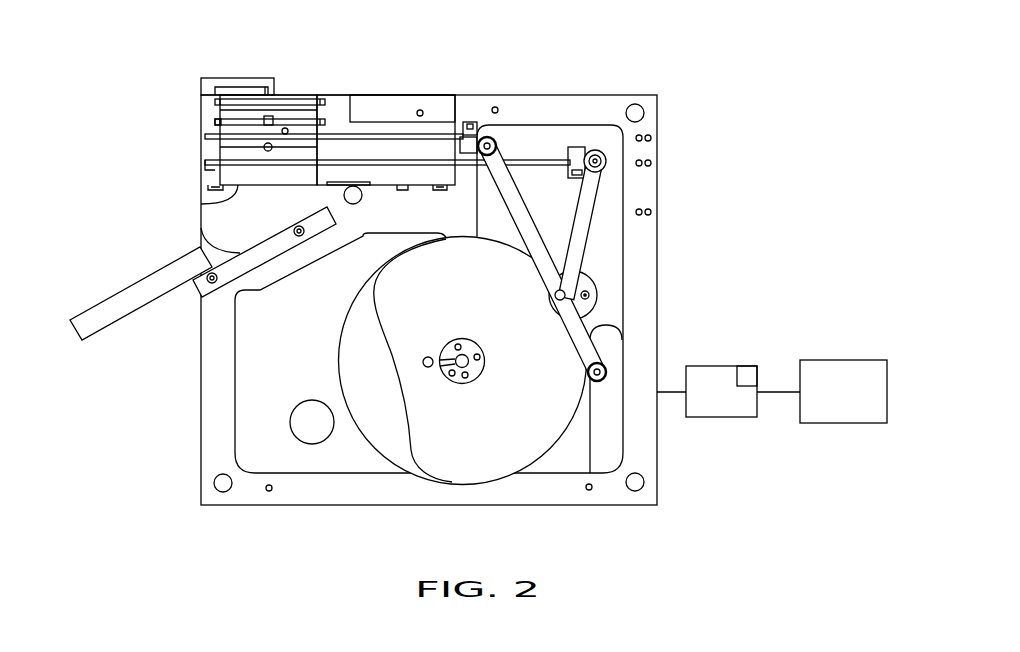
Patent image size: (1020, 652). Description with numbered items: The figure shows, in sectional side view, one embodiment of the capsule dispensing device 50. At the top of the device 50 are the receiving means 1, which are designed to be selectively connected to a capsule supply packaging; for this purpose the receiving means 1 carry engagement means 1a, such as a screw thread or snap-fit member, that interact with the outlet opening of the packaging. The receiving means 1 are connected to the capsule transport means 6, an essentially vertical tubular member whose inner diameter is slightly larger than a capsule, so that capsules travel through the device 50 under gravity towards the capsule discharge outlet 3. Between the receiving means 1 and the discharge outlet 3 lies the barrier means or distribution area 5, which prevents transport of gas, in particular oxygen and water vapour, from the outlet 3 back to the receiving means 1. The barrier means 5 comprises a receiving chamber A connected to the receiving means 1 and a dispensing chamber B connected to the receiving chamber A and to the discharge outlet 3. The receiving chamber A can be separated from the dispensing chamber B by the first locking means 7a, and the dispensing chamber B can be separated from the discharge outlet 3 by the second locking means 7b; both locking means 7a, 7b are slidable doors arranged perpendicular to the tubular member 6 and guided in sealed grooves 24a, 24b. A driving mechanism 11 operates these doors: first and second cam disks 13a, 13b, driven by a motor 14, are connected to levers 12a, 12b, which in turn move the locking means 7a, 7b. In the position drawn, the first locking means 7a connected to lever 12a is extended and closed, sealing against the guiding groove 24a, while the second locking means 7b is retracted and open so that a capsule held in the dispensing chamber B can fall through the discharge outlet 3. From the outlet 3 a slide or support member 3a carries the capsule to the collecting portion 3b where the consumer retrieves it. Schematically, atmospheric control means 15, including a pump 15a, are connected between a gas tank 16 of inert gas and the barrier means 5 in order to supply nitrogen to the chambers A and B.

The receiving means 1 is at (323, 111).
The engagement means 1a is at (225, 84).
The capsule discharge outlet 3 is at (187, 259).
The slide or support member 3a is at (240, 253).
The collecting portion 3b is at (116, 302).
The barrier means (distribution area) 5 is at (216, 106).
The capsule transport means 6 is at (217, 107).
The first locking means 7a is at (262, 135).
The second locking means 7b is at (414, 158).
The driving mechanism 11 is at (586, 318).
The lever 12a is at (523, 223).
The lever 12b is at (575, 227).
The first cam disk 13a is at (560, 362).
The second cam disk 13b is at (402, 447).
The motor 14 is at (316, 431).
The atmospheric control means 15 is at (728, 392).
The pump 15a is at (745, 372).
The gas tank 16 is at (857, 414).
The guiding means (groove) 24a is at (216, 123).
The guiding means (groove) 24b is at (161, 157).
The device 50 is at (676, 134).
The receiving chamber A is at (306, 110).
The dispensing chamber B is at (306, 146).